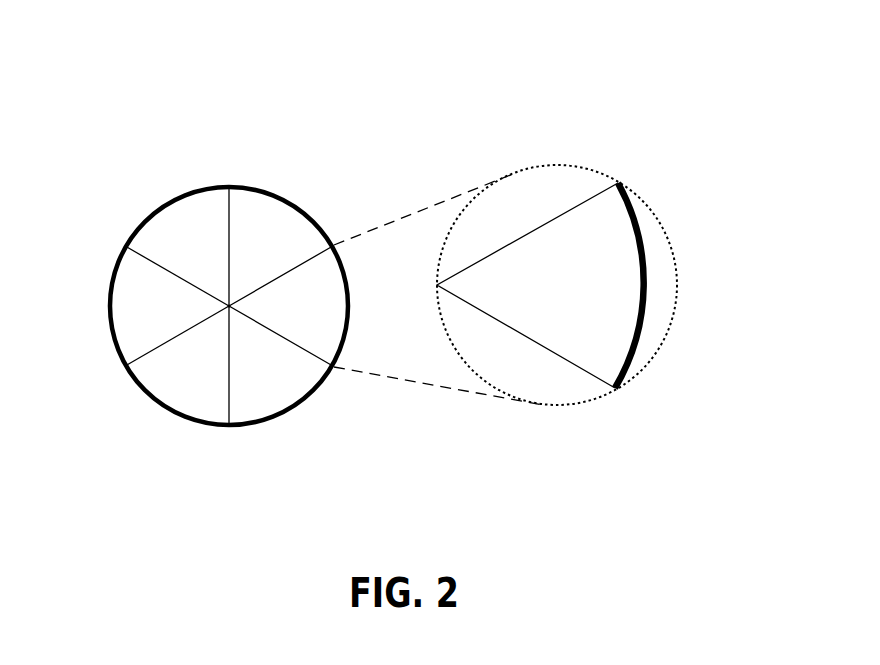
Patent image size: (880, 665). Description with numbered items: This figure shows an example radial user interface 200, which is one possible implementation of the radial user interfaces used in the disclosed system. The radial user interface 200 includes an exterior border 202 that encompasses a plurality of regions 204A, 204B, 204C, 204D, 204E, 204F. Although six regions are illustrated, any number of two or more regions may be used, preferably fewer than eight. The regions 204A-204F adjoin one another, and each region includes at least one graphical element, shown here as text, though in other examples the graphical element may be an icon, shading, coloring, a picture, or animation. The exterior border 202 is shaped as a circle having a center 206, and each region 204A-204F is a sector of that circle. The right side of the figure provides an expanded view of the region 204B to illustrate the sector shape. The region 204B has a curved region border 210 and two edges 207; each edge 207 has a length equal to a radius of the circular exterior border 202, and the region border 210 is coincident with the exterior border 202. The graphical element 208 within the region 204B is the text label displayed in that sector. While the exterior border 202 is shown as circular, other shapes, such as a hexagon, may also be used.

The radial user interface 200 is at (356, 76).
The exterior border 202 is at (219, 186).
The region 204A is at (275, 210).
The region 204B is at (331, 291).
The region 204C is at (263, 393).
The region 204D is at (177, 397).
The region 204E is at (127, 283).
The region 204F is at (175, 220).
The center 206 is at (223, 312).
The edge 207 is at (522, 237).
The segment label text 208 is at (558, 273).
The region border 210 is at (645, 298).